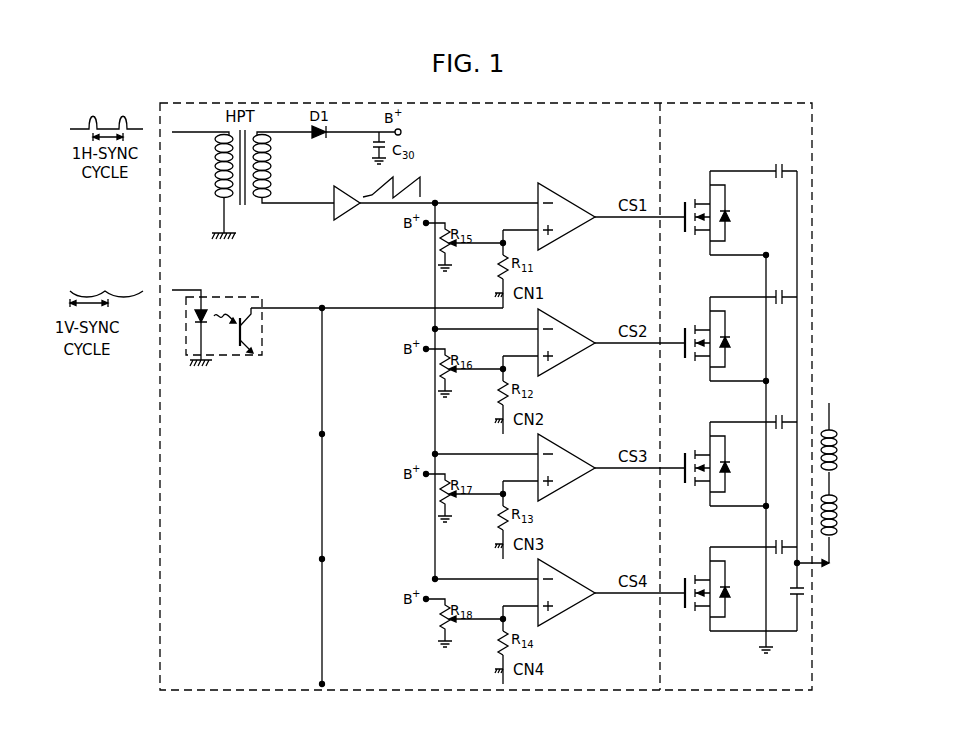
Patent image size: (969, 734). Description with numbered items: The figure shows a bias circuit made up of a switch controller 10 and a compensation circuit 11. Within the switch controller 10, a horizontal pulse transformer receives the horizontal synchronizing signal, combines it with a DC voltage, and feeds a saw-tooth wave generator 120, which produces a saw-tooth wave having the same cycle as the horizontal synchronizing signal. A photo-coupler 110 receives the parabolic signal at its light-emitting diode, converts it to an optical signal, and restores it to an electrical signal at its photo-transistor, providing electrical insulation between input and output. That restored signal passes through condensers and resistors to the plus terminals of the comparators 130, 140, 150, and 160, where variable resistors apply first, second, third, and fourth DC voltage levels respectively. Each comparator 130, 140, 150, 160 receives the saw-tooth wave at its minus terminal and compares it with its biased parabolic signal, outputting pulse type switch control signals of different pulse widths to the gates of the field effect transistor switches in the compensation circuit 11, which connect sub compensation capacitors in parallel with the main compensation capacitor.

The switch controller 10 is at (662, 117).
The compensation circuit 11 is at (814, 118).
The photo-coupler 110 is at (230, 357).
The saw-tooth wave generator 120 is at (351, 198).
The comparator 130 is at (566, 205).
The comparator 140 is at (566, 331).
The comparator 150 is at (566, 456).
The comparator 160 is at (566, 581).